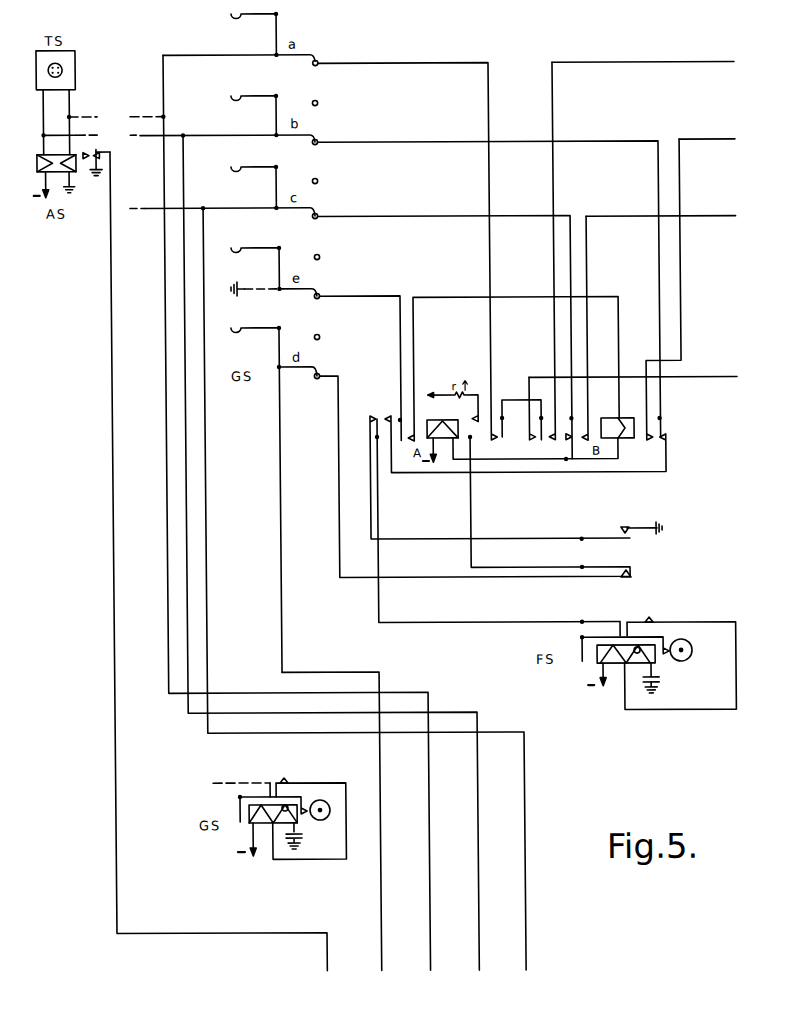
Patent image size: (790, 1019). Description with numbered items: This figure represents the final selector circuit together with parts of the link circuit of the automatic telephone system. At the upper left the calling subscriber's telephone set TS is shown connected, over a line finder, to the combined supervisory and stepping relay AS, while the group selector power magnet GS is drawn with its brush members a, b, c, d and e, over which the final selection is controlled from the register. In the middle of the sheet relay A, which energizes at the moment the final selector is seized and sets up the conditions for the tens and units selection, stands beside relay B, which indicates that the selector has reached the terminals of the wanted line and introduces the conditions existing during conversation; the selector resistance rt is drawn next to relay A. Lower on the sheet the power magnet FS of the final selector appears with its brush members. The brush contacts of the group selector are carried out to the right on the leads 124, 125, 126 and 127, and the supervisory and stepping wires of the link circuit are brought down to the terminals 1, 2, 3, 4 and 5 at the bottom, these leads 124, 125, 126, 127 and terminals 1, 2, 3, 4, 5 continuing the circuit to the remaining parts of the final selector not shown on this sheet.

The terminal 1 is at (221, 571).
The terminal 2 is at (334, 832).
The terminal 3 is at (299, 523).
The terminal 4 is at (333, 563).
The terminal 5 is at (367, 599).
The line 124 is at (658, 63).
The line 125 is at (722, 140).
The line 126 is at (675, 216).
The line 127 is at (648, 377).